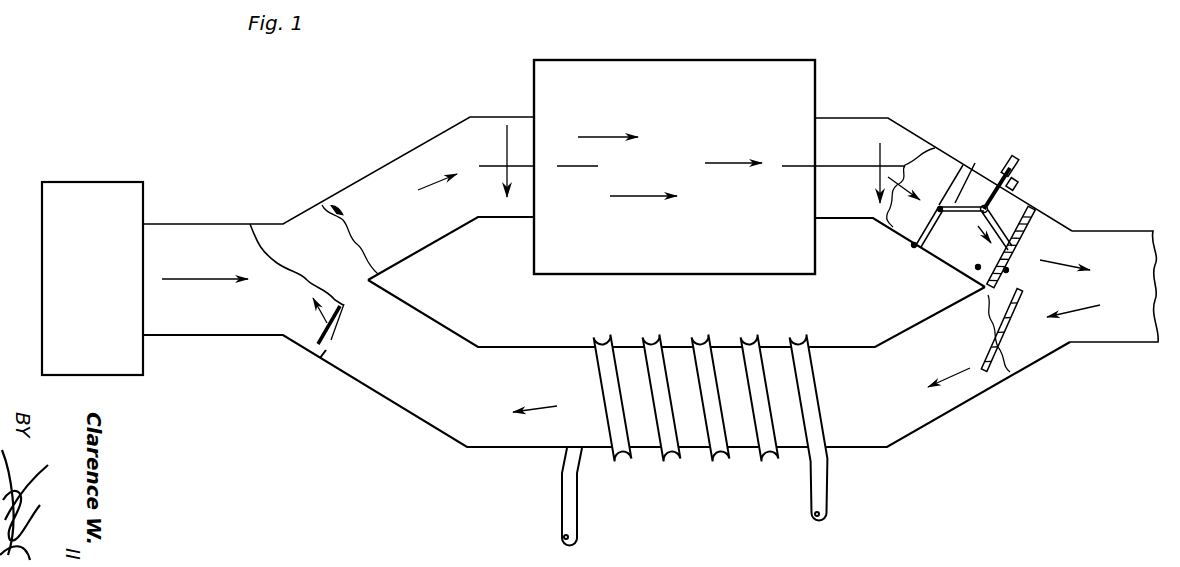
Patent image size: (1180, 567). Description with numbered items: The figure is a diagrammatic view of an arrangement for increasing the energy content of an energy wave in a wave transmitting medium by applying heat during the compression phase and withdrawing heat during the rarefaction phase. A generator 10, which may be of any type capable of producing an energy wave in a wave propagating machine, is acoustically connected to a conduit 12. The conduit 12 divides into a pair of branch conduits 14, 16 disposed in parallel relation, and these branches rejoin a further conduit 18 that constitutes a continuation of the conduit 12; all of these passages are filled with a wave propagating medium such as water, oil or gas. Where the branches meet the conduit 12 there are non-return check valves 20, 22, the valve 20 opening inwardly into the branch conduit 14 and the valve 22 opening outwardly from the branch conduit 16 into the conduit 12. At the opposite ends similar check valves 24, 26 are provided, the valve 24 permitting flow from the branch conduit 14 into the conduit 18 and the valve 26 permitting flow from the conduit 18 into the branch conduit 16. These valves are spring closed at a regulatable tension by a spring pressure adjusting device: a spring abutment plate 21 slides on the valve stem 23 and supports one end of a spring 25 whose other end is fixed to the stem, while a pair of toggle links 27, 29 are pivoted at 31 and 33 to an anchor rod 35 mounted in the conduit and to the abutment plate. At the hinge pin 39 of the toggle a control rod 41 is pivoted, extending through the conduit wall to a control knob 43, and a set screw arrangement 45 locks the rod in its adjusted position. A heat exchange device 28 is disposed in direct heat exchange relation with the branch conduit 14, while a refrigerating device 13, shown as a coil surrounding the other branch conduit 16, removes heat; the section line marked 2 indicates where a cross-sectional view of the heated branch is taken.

The section line 2- 2 is at (692, 164).
The generator 10 is at (130, 355).
The conduit 12 is at (200, 325).
The heat removing or refrigerating device 13 is at (720, 462).
The branch conduit 14 is at (848, 118).
The branch conduit 16 is at (480, 430).
The conduit 18 is at (1100, 231).
The non-return check valve 20 is at (340, 212).
The spring abutment plate 21 is at (1003, 235).
The non-return check valve 22 is at (343, 305).
The valve stem 23 is at (984, 230).
The non-return check valve 24 is at (1006, 270).
The spring 25 is at (975, 268).
The non-return check valve 26 is at (1003, 340).
The toggle link 27 is at (965, 176).
The heat exchange device 28 is at (730, 64).
The toggle link 29 is at (984, 216).
The pivot 31 is at (940, 207).
The pivot 33 is at (1022, 243).
The anchor rod 35 is at (910, 244).
The hinge pin 39 is at (990, 210).
The control rod 41 is at (1003, 160).
The control knob 43 is at (1007, 160).
The set screw arrangement 45 is at (1016, 183).